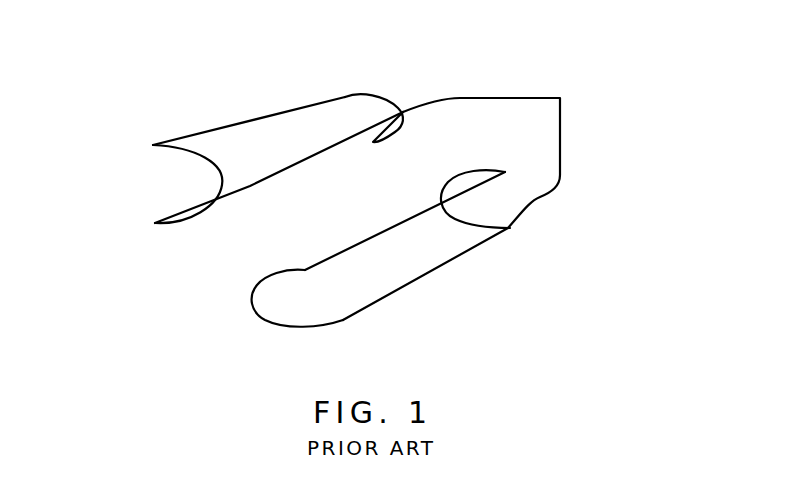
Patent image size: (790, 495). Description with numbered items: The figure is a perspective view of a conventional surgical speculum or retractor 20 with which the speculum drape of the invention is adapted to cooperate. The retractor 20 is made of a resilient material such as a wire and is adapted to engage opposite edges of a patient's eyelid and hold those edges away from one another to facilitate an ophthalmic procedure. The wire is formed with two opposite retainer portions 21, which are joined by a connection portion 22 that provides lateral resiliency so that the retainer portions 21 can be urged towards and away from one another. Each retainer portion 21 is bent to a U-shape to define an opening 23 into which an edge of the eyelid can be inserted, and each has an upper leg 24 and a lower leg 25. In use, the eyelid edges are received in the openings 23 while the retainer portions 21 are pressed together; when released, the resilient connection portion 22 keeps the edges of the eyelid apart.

The speculum or retractor 20 is at (268, 103).
The retainer portions 21 is at (361, 235).
The connection portion 22 is at (560, 137).
The openings 23 is at (193, 182).
The upper legs 24 is at (323, 103).
The lower legs 25 is at (263, 187).